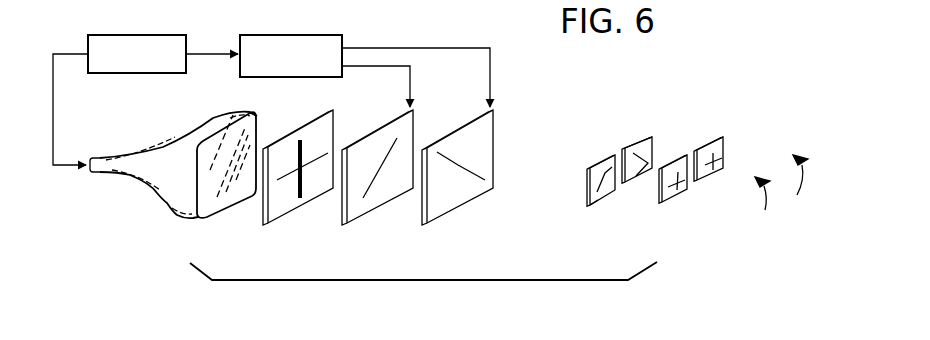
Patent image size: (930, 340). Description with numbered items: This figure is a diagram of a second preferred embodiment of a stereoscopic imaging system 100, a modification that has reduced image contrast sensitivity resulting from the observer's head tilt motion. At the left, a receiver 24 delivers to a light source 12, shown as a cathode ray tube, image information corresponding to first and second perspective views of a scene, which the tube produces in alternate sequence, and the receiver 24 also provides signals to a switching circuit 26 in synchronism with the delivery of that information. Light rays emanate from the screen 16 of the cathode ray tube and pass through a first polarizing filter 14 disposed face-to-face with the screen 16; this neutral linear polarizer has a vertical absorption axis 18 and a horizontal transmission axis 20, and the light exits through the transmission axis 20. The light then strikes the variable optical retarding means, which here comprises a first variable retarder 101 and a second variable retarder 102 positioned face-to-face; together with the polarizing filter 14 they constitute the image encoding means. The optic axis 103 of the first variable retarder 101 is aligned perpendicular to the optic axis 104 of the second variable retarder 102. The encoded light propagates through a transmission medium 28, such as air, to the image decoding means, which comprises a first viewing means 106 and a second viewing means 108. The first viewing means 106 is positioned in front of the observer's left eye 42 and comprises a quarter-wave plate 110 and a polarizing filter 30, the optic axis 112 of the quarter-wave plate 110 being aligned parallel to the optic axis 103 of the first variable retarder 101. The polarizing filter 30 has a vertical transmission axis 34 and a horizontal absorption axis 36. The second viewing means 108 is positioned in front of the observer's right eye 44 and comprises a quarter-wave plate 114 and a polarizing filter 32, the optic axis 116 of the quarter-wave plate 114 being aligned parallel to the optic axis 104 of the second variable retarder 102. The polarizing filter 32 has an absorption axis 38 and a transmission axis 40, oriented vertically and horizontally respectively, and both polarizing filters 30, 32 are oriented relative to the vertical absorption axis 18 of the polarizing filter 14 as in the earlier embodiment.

The receiver 24 is at (88, 42).
The switching circuit 26 is at (342, 37).
The light source 12 is at (150, 162).
The stereoscopic imaging system 100 is at (150, 209).
The screen 16 is at (258, 120).
The first polarizing filter 14 is at (282, 224).
The vertical absorption axis 18 is at (301, 140).
The horizontal transmission axis 20 is at (317, 164).
The first variable retarder 101 is at (414, 131).
The optic axis of first variable retarder 103 is at (376, 174).
The second variable retarder 102 is at (495, 140).
The optic axis of second variable retarder 104 is at (458, 167).
The transmission medium 28 is at (534, 167).
The first viewing means 106 is at (585, 163).
The quarter-wave plate 110 is at (592, 204).
The optic axis of quarter-wave plate 112 is at (606, 192).
The second viewing means 108 is at (622, 141).
The quarter-wave plate 114 is at (648, 134).
The optic axis of quarter-wave plate 116 is at (637, 176).
The polarizing filter 30 is at (666, 202).
The vertical transmission axis 34 is at (676, 171).
The horizontal absorption axis 36 is at (679, 190).
The polarizing filter 32 is at (720, 180).
The transmission axis 40 is at (711, 150).
The absorption axis 38 is at (716, 160).
The left eye 42 is at (766, 205).
The right eye 44 is at (795, 184).